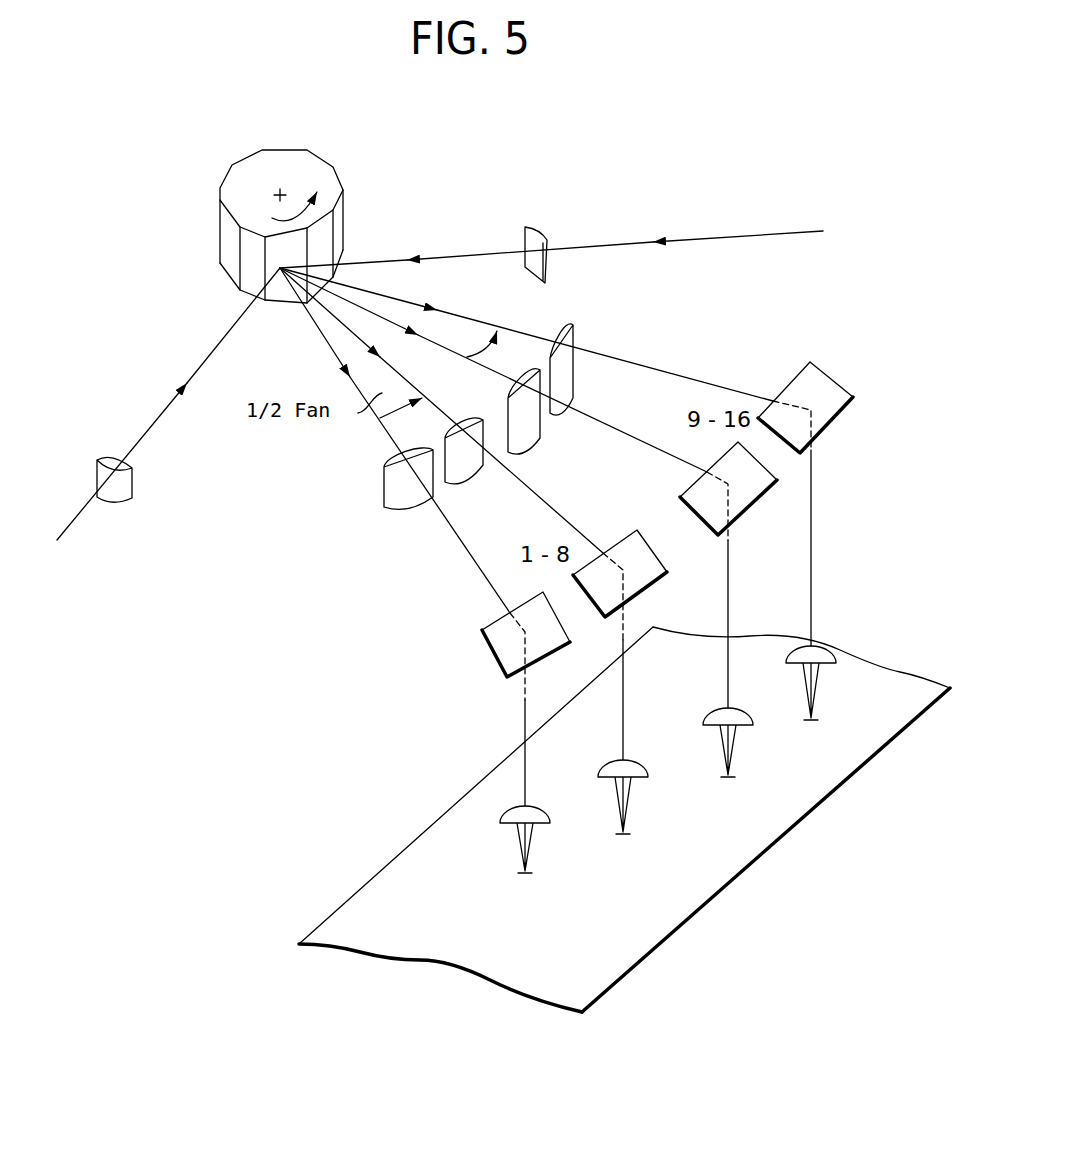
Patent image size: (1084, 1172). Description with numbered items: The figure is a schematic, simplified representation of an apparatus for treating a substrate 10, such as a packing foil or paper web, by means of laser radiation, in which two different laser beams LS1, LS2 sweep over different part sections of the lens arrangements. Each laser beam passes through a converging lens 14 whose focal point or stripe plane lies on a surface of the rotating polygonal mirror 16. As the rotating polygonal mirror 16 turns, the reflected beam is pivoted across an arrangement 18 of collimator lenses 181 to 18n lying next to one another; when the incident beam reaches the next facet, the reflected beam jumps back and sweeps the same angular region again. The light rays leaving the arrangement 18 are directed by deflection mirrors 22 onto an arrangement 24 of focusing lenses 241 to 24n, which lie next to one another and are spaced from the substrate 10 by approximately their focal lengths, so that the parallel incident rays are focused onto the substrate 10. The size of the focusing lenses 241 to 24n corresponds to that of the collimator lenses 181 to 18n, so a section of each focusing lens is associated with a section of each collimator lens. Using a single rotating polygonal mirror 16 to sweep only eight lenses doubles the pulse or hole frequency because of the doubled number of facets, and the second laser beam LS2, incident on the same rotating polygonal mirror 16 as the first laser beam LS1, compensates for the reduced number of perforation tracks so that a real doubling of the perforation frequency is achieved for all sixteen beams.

The substrate 10 is at (702, 880).
The converging lens 14 is at (543, 231).
The rotating polygonal mirror 16 is at (334, 154).
The arrangement of collimator lenses 18 is at (516, 414).
The first collimator lens 181 is at (392, 490).
The nth collimator lens 18n is at (568, 362).
The deflection mirror 22 is at (822, 397).
The arrangement of focusing lenses 24 is at (637, 739).
The first focusing lens 241 is at (507, 812).
The nth focusing lens 24n is at (820, 658).
The first laser beam LS1 is at (167, 403).
The second laser beam LS2 is at (758, 232).